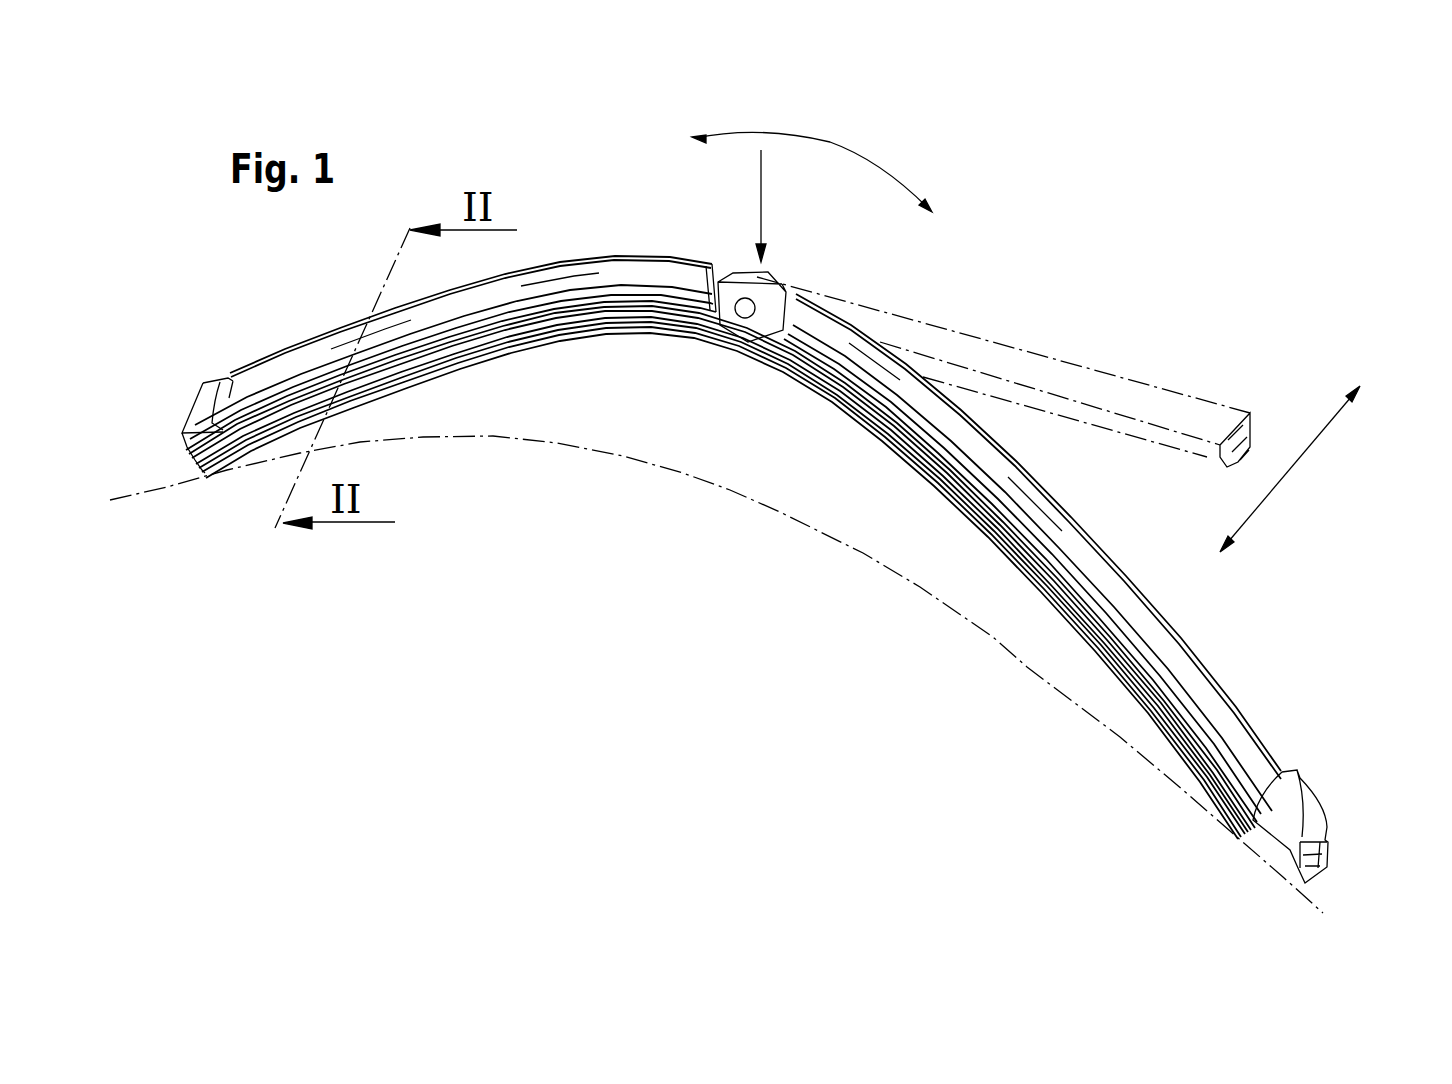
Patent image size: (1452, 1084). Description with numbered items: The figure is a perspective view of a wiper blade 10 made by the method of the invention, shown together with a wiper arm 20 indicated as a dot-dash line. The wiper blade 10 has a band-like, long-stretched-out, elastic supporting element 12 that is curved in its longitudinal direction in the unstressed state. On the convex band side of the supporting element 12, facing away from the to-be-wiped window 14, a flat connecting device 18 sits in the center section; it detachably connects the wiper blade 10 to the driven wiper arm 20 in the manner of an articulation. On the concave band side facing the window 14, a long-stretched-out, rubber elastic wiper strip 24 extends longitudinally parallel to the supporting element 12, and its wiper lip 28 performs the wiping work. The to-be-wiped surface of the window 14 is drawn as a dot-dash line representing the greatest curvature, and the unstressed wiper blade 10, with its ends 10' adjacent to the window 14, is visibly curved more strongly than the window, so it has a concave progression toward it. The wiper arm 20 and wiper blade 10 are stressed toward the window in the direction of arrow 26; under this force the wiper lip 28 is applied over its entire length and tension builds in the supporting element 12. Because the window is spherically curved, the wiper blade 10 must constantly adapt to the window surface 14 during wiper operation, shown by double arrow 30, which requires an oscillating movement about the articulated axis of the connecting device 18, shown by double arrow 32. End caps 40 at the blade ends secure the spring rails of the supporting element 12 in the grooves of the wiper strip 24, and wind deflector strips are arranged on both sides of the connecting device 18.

The wiper blade 10 is at (733, 539).
The ends of the wiper blade 10' is at (759, 669).
The supporting element 12 is at (1238, 782).
The window 14 is at (645, 460).
The connecting device 18 is at (745, 265).
The wiper arm 20 is at (1228, 405).
The wiper strip 24 is at (494, 374).
The arrow 26 is at (763, 190).
The wiper lip 28 is at (947, 508).
The double arrow 30 is at (1290, 470).
The double arrow 32 is at (821, 141).
The end caps 40 is at (203, 374).